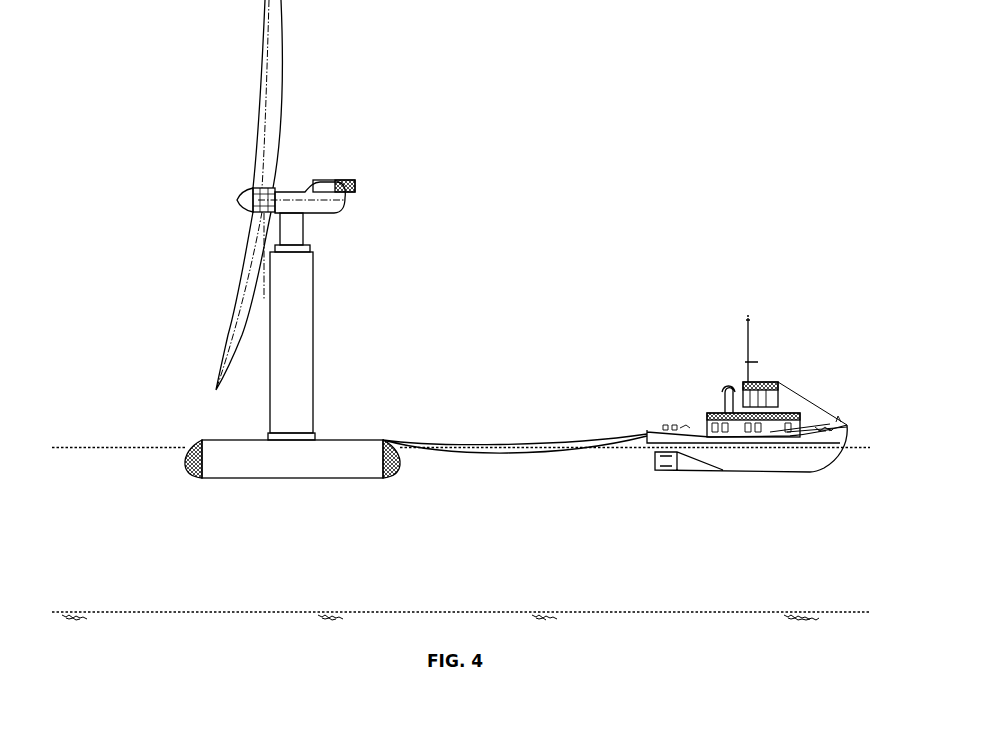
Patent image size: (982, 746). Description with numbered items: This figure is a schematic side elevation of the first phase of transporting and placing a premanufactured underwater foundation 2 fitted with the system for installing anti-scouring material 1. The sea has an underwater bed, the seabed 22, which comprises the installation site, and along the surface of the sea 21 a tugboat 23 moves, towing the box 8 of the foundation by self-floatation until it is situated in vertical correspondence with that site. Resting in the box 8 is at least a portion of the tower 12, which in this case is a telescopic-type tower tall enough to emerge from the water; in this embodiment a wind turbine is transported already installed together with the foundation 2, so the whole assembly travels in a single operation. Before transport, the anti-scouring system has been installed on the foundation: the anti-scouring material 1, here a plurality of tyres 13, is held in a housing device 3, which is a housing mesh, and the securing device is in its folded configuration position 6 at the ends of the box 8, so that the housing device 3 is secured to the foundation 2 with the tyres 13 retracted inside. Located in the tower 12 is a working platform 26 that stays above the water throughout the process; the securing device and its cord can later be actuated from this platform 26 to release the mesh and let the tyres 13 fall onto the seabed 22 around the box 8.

The anti-scouring material 1 is at (434, 460).
The premanufactured underwater foundation 2 is at (376, 430).
The housing device 3 is at (153, 459).
The folded configuration position 6 is at (185, 468).
The box 8 is at (376, 430).
The tower 12 is at (313, 332).
The tyres 13 is at (391, 468).
The surface of the sea 21 is at (92, 448).
The seabed 22 is at (692, 612).
The tugboat 23 is at (691, 430).
The working platform 26 is at (321, 245).